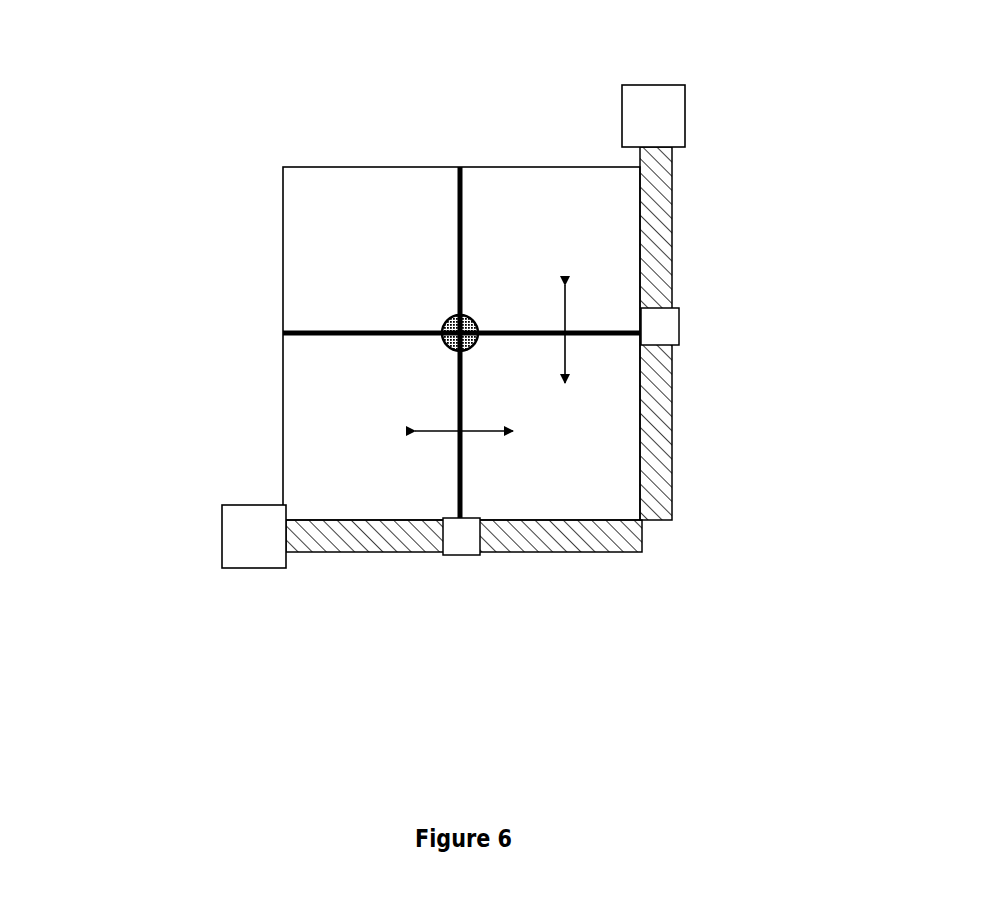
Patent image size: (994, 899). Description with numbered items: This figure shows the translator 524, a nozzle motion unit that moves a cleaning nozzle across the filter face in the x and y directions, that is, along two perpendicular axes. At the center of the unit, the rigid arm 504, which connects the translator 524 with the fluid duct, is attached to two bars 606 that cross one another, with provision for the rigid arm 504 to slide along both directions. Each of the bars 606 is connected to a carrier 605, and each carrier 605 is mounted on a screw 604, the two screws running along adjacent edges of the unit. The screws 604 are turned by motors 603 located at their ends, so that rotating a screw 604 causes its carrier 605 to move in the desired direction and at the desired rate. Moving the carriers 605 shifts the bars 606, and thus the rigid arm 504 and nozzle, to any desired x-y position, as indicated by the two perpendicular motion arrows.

The translator 524 is at (187, 91).
The rigid arm 504 is at (445, 321).
The motors 603 is at (608, 122).
The screws 604 is at (695, 258).
The carriers 605 is at (697, 335).
The bars 606 is at (452, 202).